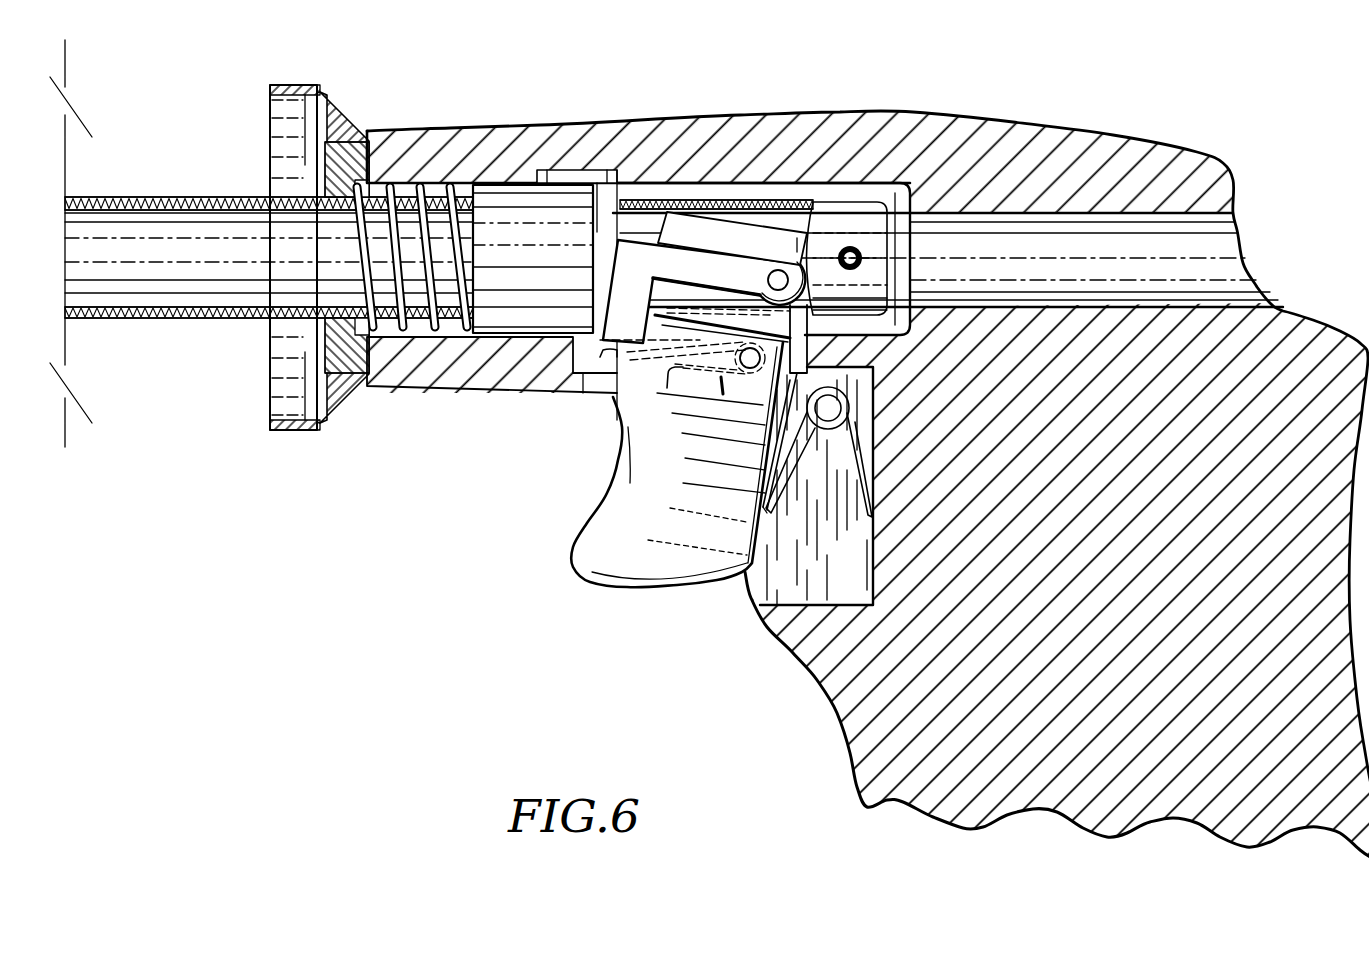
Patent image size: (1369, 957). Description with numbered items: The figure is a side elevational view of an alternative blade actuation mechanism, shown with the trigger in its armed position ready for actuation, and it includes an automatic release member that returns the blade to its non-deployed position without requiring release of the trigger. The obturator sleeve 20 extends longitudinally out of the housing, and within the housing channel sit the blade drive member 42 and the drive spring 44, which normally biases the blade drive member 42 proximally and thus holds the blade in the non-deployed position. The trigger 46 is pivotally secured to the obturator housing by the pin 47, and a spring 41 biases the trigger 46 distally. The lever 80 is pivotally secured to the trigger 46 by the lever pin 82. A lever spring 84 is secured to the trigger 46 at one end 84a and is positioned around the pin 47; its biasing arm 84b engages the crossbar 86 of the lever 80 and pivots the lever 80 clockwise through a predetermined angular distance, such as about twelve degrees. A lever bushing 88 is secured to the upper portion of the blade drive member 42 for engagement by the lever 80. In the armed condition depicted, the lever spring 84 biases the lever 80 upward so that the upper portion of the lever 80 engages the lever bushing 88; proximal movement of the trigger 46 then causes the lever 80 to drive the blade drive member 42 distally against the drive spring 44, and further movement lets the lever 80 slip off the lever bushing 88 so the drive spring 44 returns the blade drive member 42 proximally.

The obturator sleeve 20 is at (892, 112).
The spring 41 is at (867, 510).
The blade drive member 42 is at (490, 198).
The drive spring 44 is at (383, 182).
The trigger 46 is at (583, 582).
The pin 47 is at (723, 377).
The lever 80 is at (637, 228).
The lever pin 82 is at (779, 271).
The lever spring 84 is at (723, 377).
The end of lever spring 84a is at (668, 370).
The biasing arm 84b is at (622, 352).
The crossbar 86 is at (605, 356).
The lever bushing 88 is at (608, 195).